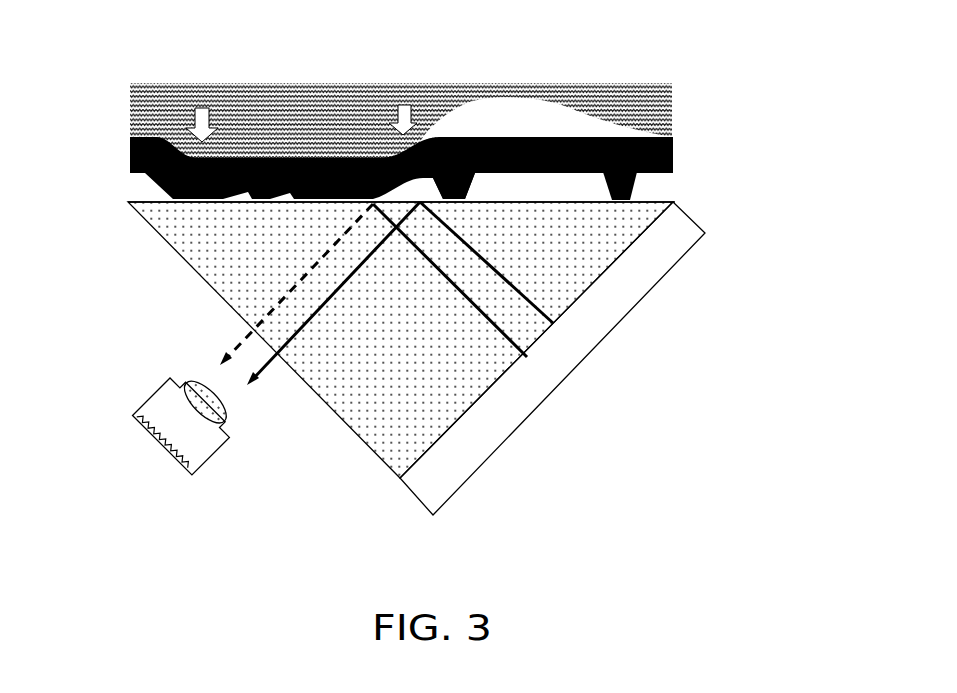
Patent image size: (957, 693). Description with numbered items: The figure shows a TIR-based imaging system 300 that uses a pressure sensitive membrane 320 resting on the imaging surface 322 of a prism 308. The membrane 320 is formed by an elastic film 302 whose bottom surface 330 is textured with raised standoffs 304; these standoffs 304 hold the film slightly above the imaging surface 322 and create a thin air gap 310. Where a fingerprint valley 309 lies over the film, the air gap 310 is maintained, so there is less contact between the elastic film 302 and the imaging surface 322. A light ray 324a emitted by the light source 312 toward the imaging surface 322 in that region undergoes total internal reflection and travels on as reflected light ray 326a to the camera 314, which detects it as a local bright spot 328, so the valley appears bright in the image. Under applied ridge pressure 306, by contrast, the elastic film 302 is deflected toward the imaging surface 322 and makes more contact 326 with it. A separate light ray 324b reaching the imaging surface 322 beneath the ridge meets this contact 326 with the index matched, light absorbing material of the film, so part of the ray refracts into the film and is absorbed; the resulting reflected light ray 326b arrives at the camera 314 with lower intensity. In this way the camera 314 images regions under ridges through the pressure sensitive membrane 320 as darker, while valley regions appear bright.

The TIR-based imaging system 300 is at (106, 83).
The elastic film 302 is at (401, 168).
The raised standoffs 304 is at (636, 188).
The ridge pressure 306 is at (301, 123).
The prism 308 is at (400, 340).
The valley 309 is at (546, 119).
The air gap 310 is at (539, 187).
The light source 312 is at (552, 358).
The camera 314 is at (188, 419).
The pressure sensitive membrane 320 is at (462, 196).
The imaging surface 322 is at (675, 202).
The light ray 324a is at (594, 340).
The light ray 324b is at (567, 365).
The more contact 326 is at (213, 190).
The reflected light ray 326a is at (292, 395).
The reflected light ray 326b is at (229, 343).
The local bright spot 328 is at (675, 137).
The bottom surface 330 is at (675, 173).